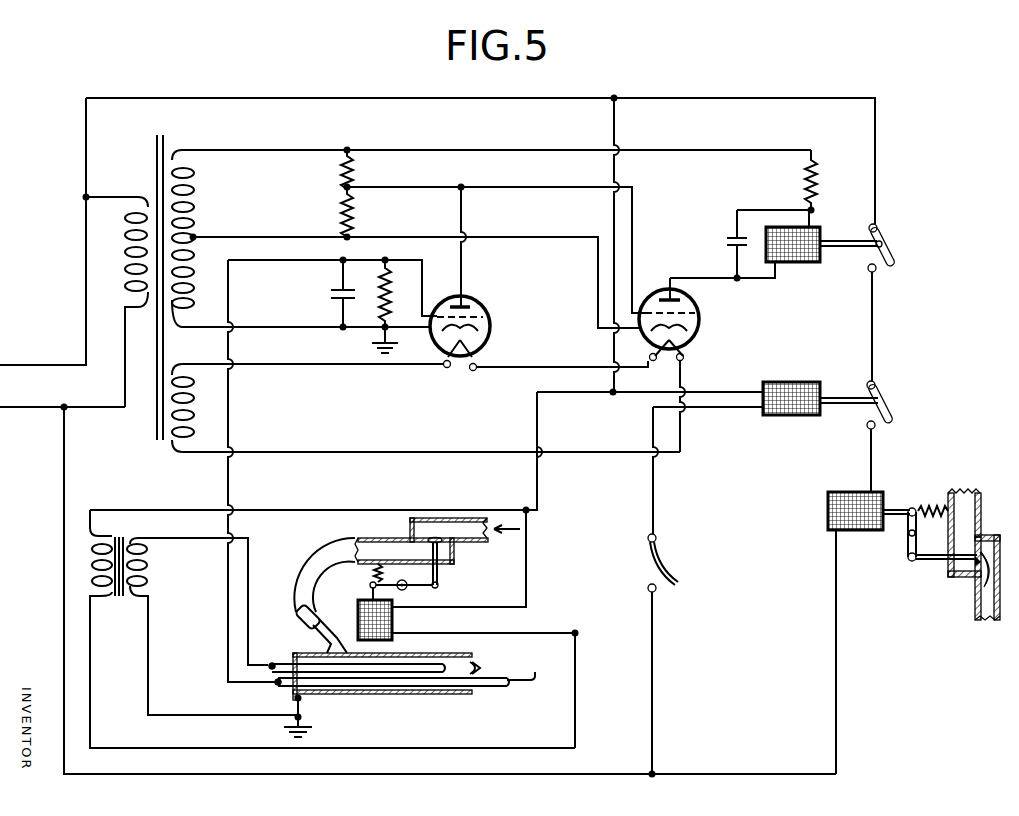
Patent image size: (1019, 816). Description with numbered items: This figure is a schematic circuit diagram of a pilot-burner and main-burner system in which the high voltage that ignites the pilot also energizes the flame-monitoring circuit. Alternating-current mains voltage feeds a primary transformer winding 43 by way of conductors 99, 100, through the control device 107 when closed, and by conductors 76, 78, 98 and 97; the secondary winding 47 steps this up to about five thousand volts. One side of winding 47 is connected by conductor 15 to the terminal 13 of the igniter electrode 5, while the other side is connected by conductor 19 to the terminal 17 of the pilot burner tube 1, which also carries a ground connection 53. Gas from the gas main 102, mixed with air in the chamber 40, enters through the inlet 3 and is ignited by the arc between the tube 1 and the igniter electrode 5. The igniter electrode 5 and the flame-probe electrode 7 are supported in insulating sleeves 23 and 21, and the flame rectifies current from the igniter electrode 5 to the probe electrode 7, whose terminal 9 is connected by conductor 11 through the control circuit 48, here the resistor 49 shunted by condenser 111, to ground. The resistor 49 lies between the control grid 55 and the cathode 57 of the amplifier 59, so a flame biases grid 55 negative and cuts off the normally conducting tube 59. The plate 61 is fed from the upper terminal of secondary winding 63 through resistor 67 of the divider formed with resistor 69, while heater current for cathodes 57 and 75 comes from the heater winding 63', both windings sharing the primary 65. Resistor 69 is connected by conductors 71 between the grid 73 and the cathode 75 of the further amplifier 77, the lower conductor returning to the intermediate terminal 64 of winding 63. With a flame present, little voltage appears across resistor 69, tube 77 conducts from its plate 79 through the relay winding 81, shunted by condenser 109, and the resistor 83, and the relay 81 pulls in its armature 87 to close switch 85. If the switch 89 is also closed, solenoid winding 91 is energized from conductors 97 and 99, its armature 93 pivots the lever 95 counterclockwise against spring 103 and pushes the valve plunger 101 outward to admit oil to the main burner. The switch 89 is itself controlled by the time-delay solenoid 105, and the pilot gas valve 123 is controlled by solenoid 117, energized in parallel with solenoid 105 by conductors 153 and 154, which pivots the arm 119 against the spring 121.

The pilot burner chamber 1 is at (462, 696).
The inlet 3 is at (328, 630).
The igniter electrode 5 is at (482, 668).
The flame rod or probe electrode 7 is at (537, 682).
The electric terminal 9 is at (275, 684).
The insulation-covered conductor 11 is at (228, 590).
The electric terminal 13 is at (271, 662).
The insulation-covered conductor 15 is at (196, 540).
The terminal 17 is at (303, 698).
The conductor 19 is at (302, 707).
The insulating sleeve 21 is at (415, 684).
The insulating sleeve 23 is at (425, 664).
The chamber 40 is at (293, 606).
The primary transformer winding 43 is at (92, 563).
The secondary winding 47 is at (165, 566).
The indicator or control circuit 48 is at (578, 279).
The resistor 49 is at (368, 294).
The ground connection 53 is at (328, 536).
The control-grid electrode 55 is at (490, 316).
The cathode 57 is at (490, 330).
The electron-discharge amplifier 59 is at (515, 296).
The plate 61 is at (455, 300).
The secondary winding 63 is at (491, 238).
The heater secondary winding 63' is at (426, 408).
The intermediate terminal 64 is at (196, 236).
The primary 65 is at (125, 264).
The resistor 67 is at (357, 167).
The resistor 69 is at (357, 212).
The conductors 71 is at (568, 237).
The control grid 73 is at (700, 320).
The cathode 75 is at (698, 338).
The conductor 76 is at (577, 632).
The vacuum-tube amplifier 77 is at (742, 309).
The conductor 78 is at (290, 509).
The plate 79 is at (658, 292).
The solenoid relay winding 81 is at (800, 264).
The resistor 83 is at (820, 190).
The switch 85 is at (893, 256).
The armature 87 is at (846, 238).
The switch 89 is at (893, 418).
The solenoid winding 91 is at (855, 505).
The armature 93 is at (903, 510).
The lever 95 is at (905, 552).
The conductor 97 is at (549, 98).
The conductor 98 is at (618, 176).
The conductor 99 is at (64, 632).
The conductor 100 is at (655, 672).
The valve plunger 101 is at (975, 580).
The gas main 102 is at (470, 518).
The spring 103 is at (931, 505).
The solenoid winding 105 is at (783, 382).
The control device 107 is at (670, 572).
The by-pass condenser 109 is at (727, 240).
The by-pass condenser 111 is at (330, 295).
The solenoid relay 117 is at (393, 622).
The arm 119 is at (418, 587).
The spring 121 is at (372, 580).
The valve 123 is at (432, 530).
The conductor 153 is at (527, 557).
The conductor 154 is at (485, 682).